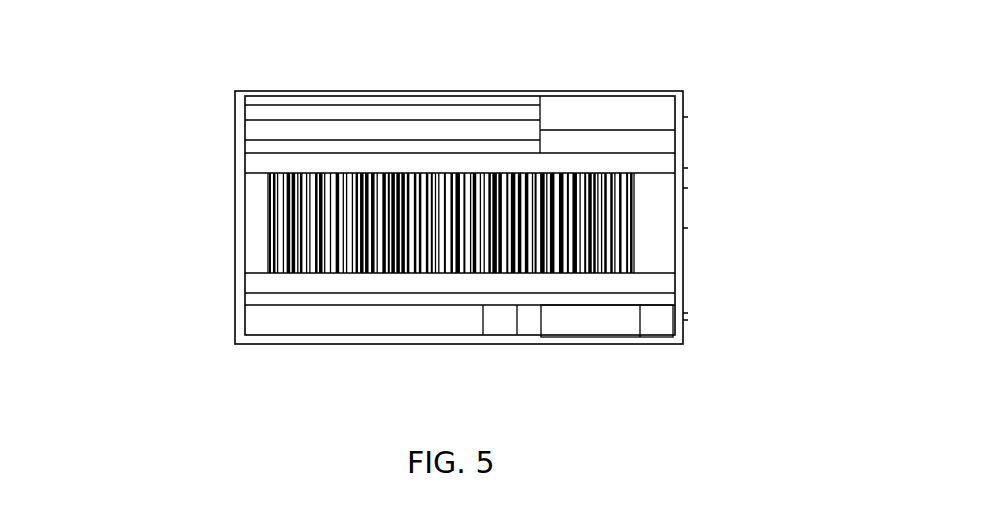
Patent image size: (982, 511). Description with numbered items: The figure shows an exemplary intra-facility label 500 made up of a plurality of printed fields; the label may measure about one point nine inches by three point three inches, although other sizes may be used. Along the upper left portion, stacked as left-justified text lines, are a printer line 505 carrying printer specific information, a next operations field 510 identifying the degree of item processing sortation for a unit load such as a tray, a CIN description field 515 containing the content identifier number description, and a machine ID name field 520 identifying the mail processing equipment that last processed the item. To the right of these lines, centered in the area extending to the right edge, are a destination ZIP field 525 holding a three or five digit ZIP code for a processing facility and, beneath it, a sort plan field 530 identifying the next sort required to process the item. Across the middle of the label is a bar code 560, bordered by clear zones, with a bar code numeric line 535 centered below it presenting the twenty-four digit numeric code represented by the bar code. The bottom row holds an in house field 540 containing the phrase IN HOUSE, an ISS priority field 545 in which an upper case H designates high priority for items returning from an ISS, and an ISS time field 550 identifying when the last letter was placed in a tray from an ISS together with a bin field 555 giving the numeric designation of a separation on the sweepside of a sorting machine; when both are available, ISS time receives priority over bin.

The intra-facility label 500 is at (832, 100).
The printer line field 505 is at (255, 98).
The next operations field 510 is at (253, 110).
The CIN description field 515 is at (253, 128).
The machine ID name field 520 is at (253, 145).
The destination ZIP field 525 is at (605, 112).
The sort plan field 530 is at (662, 145).
The bar code numeric line field 535 is at (253, 295).
The in house field 540 is at (248, 318).
The ISS priority field 545 is at (523, 325).
The ISS time field 550 is at (590, 320).
The bin field 555 is at (660, 323).
The bar code 560 is at (605, 225).